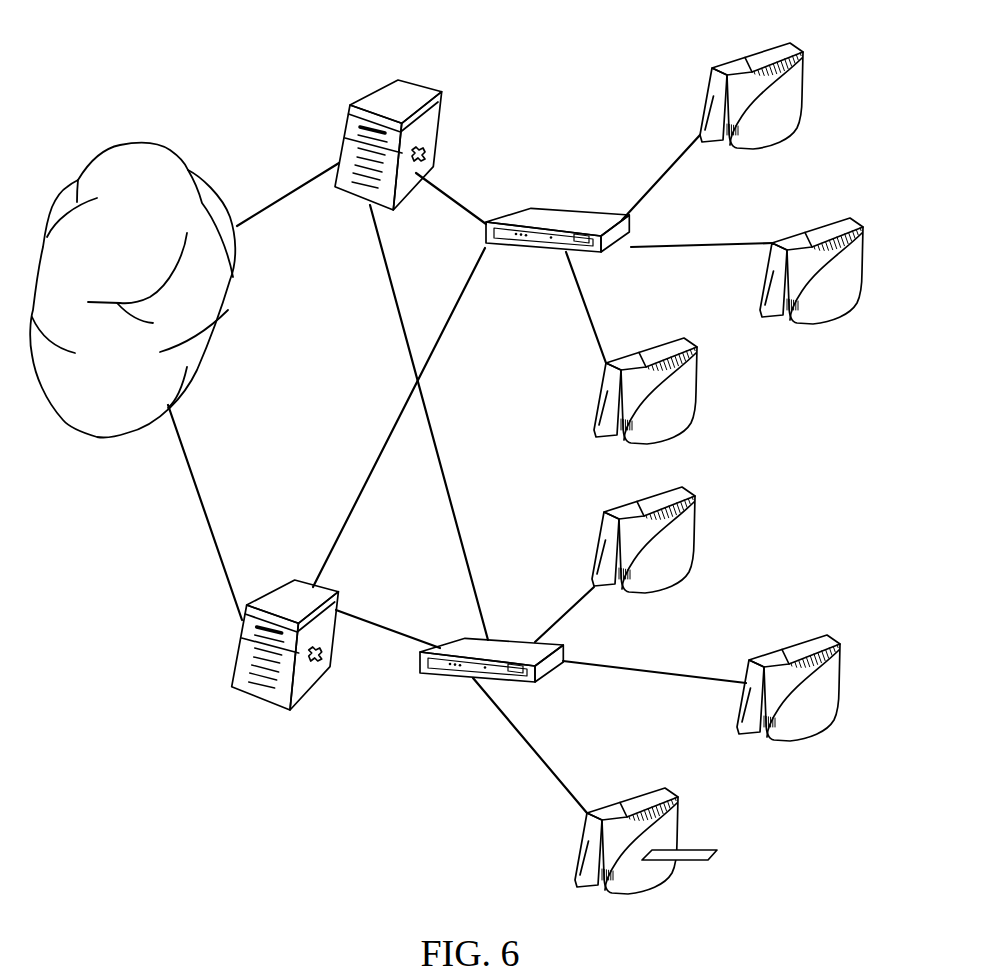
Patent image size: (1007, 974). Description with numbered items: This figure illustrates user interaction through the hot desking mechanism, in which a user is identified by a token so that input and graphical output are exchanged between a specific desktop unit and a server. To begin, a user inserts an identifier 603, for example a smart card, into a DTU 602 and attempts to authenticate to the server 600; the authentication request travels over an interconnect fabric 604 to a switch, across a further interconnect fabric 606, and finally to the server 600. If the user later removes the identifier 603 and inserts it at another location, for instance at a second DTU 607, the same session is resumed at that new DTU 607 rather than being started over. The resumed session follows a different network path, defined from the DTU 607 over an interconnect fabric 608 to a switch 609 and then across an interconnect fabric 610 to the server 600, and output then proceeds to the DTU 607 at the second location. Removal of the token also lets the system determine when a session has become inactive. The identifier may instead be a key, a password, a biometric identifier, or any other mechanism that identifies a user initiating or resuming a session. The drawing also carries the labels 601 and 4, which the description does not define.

The network device (router/hub) 4 is at (498, 636).
The server 600 is at (285, 677).
The server 601 is at (432, 141).
The DTU 602 is at (680, 815).
The identifier 603 is at (717, 849).
The interconnect fabric 604 is at (522, 736).
The interconnect fabric 606 is at (392, 631).
The DTU 607 is at (729, 61).
The interconnect fabric 608 is at (655, 185).
The switch 609 is at (524, 446).
The interconnect fabric 610 is at (442, 338).